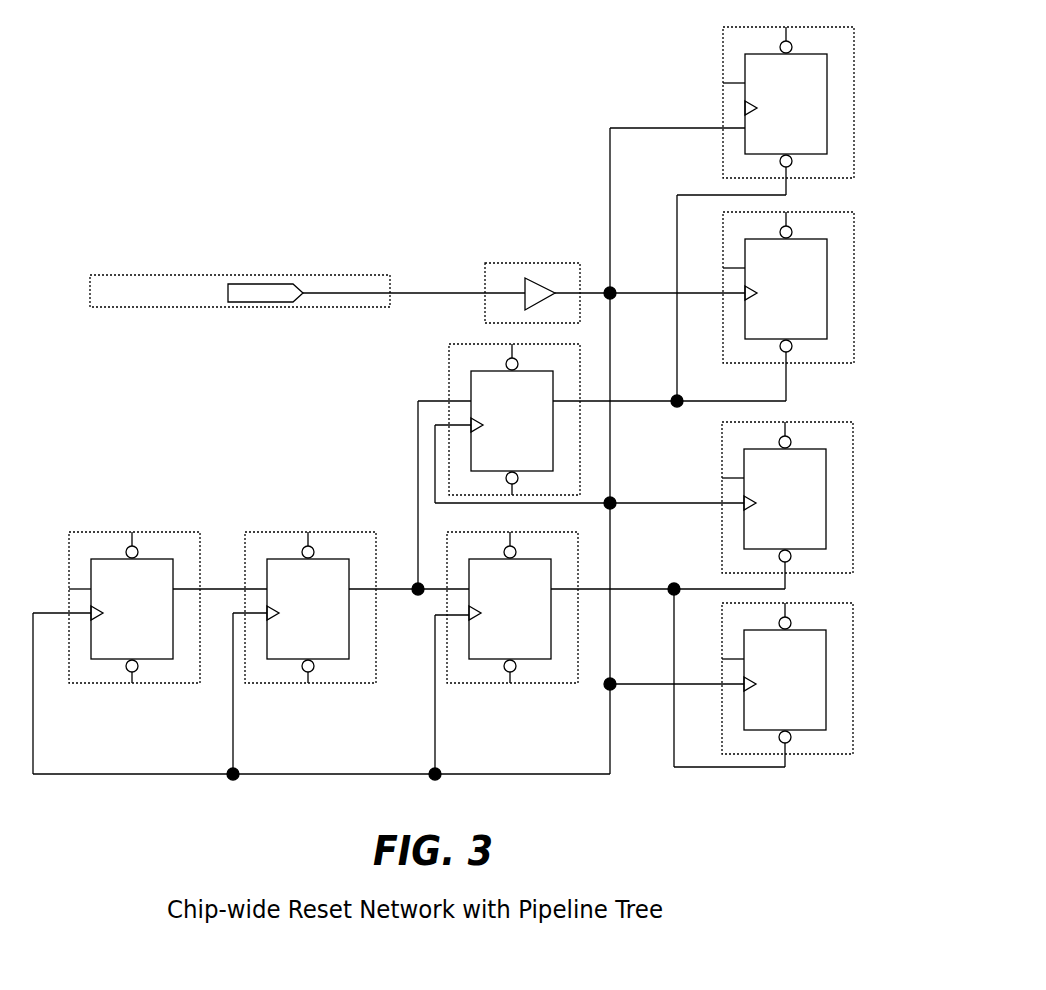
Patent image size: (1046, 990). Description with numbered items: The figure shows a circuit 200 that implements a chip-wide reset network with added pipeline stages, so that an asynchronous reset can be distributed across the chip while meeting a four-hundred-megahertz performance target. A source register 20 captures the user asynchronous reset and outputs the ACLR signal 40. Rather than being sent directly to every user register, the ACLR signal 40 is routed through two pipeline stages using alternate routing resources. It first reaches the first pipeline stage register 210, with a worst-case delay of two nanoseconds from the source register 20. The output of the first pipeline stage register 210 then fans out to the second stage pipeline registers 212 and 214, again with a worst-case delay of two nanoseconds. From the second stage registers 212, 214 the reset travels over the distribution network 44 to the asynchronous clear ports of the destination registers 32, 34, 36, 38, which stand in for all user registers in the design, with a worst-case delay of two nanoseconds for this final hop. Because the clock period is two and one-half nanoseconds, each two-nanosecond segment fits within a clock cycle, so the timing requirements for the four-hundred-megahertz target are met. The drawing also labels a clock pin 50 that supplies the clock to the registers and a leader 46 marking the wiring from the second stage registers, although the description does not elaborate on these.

The circuit 200 is at (155, 162).
The clock pin 50 is at (265, 302).
The source register 20 is at (134, 607).
The ACLR signal 40 is at (222, 589).
The first pipeline stage register 210 is at (310, 607).
The second stage pipeline register 212 is at (514, 419).
The second stage pipeline register 214 is at (512, 607).
The destination register 32 is at (788, 102).
The destination register 34 is at (788, 287).
The destination register 36 is at (787, 497).
The destination register 38 is at (787, 678).
The distribution network 44 is at (641, 594).
The reset line from stage 2 register 212 46 is at (641, 404).